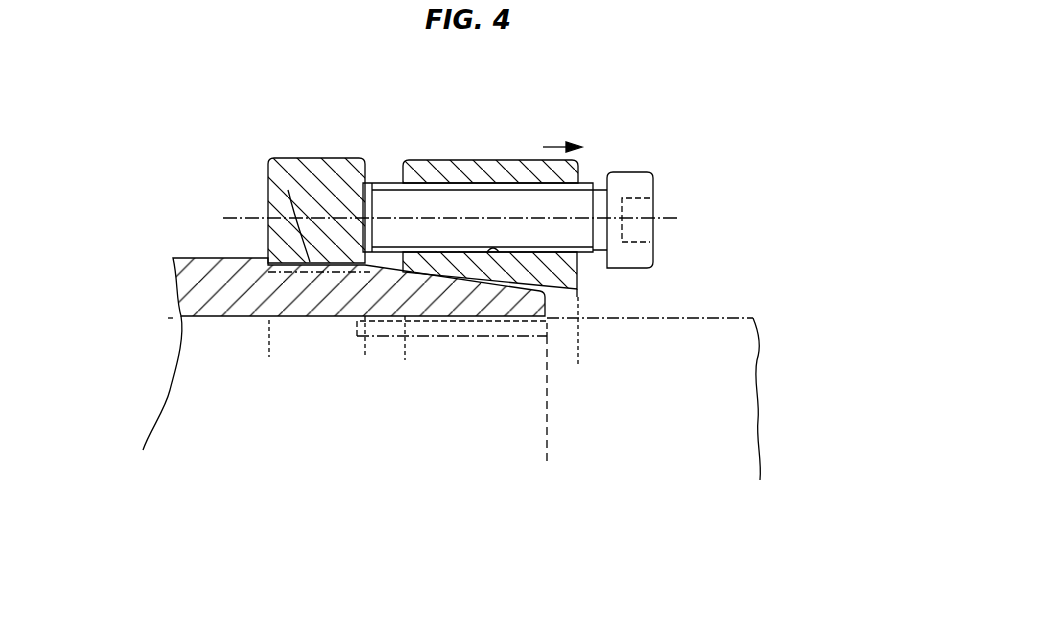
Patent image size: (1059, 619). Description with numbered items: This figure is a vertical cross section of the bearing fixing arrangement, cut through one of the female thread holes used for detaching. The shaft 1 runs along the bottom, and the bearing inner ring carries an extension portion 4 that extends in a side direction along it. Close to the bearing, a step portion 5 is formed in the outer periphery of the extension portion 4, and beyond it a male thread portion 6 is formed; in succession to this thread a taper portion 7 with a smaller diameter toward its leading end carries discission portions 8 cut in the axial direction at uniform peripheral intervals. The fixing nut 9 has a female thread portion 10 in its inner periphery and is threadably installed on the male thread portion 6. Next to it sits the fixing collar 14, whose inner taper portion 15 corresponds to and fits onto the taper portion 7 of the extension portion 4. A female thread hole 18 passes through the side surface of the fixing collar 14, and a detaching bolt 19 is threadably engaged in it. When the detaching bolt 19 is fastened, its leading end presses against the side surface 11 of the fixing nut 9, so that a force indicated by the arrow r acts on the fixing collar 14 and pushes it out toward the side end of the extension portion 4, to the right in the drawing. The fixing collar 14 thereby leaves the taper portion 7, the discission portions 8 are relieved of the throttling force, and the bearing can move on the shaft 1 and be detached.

The shaft 1 is at (759, 338).
The extension portion 4 is at (198, 258).
The step portion 5 is at (243, 312).
The male thread portion 6 is at (308, 262).
The taper portion 7 is at (440, 278).
The discission portions 8 is at (545, 330).
The fixing nut 9 is at (318, 158).
The female thread portion 10 is at (270, 272).
The side surface 11 is at (365, 272).
The fixing collar 14 is at (511, 160).
The taper portion 15 is at (577, 297).
The female thread hole 18 is at (497, 253).
The detaching bolt 19 is at (470, 197).
The arrow r is at (553, 145).